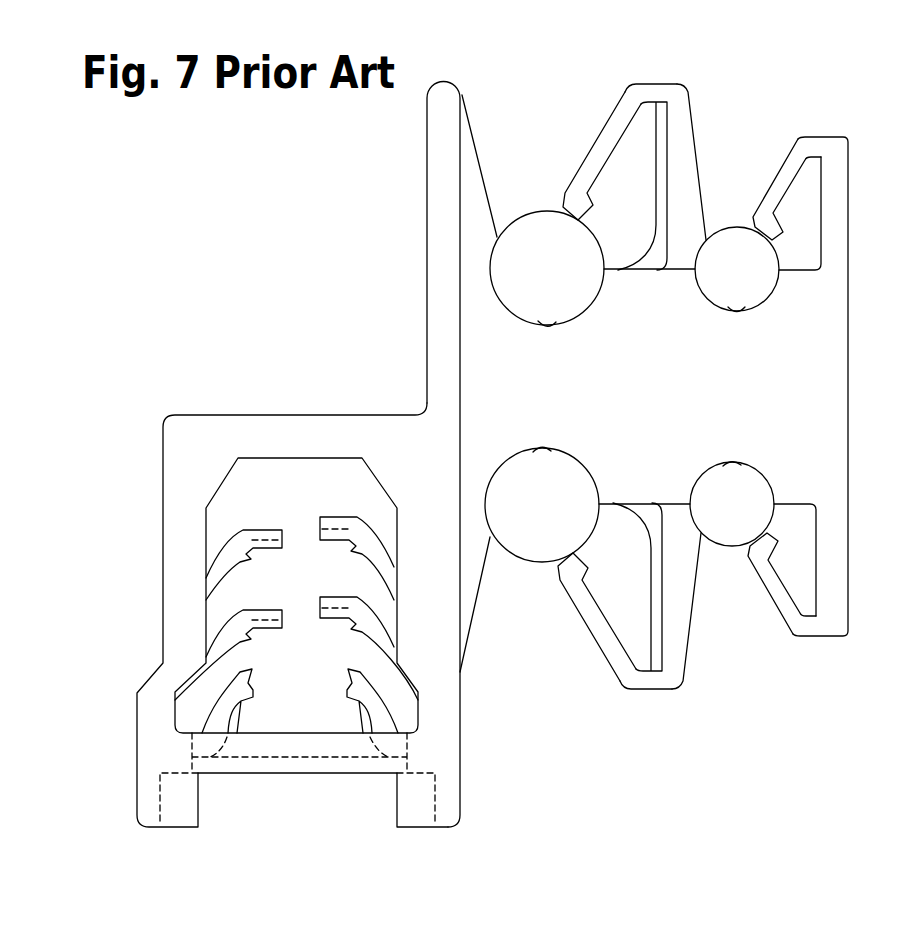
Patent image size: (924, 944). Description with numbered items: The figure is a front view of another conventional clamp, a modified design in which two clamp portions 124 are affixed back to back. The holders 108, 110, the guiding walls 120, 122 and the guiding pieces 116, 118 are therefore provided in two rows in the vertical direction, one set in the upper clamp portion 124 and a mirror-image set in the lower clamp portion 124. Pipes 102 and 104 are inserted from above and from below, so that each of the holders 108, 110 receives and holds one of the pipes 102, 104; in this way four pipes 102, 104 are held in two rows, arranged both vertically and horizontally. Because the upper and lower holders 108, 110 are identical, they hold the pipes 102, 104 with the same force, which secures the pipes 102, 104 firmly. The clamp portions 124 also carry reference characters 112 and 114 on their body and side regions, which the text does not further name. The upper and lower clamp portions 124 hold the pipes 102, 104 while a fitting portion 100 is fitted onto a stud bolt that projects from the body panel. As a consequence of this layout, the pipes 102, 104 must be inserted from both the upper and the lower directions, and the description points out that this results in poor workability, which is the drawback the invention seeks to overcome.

The fitting portion 100 is at (307, 807).
The pipe 102 is at (508, 279).
The pipe 104 is at (755, 296).
The holder 108 is at (551, 326).
The holder 110 is at (734, 312).
The latch body 112 is at (688, 170).
The side bar 114 is at (837, 216).
The guiding piece 116 is at (601, 158).
The guiding piece 118 is at (783, 163).
The guiding wall 120 is at (477, 146).
The guiding wall 122 is at (697, 140).
The clamp portion 124 is at (776, 79).